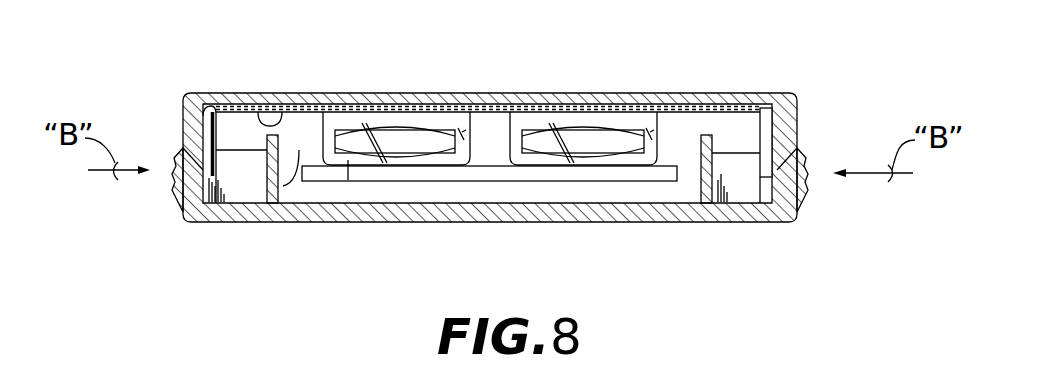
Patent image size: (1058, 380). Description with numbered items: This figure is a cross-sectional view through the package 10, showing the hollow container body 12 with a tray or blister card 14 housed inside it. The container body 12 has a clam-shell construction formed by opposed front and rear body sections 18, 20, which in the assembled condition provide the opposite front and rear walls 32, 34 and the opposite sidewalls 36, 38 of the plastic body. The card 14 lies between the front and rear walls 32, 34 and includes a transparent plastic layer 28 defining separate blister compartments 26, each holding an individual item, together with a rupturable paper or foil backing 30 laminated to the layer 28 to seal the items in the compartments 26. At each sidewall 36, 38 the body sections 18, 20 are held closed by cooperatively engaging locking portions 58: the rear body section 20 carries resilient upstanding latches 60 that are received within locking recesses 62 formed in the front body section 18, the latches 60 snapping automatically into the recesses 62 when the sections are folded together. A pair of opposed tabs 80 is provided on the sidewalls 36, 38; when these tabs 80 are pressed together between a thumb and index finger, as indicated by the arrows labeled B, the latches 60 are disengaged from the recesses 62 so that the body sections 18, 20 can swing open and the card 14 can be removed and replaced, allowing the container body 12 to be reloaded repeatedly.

The package 10 is at (802, 45).
The container body 12 is at (650, 222).
The tray or blister card 14 is at (245, 93).
The front body section 18 is at (418, 97).
The rear body section 20 is at (493, 222).
The blister compartments 26 is at (318, 200).
The transparent plastic layer 28 is at (265, 207).
The rupturable backing 30 is at (297, 118).
The front wall 32 is at (516, 95).
The rear wall 34 is at (587, 222).
The sidewall 36 is at (178, 208).
The sidewall 38 is at (800, 110).
The locking portions 58 is at (183, 125).
The latches 60 is at (775, 108).
The locking recesses 62 is at (800, 137).
The tabs 80 is at (176, 178).